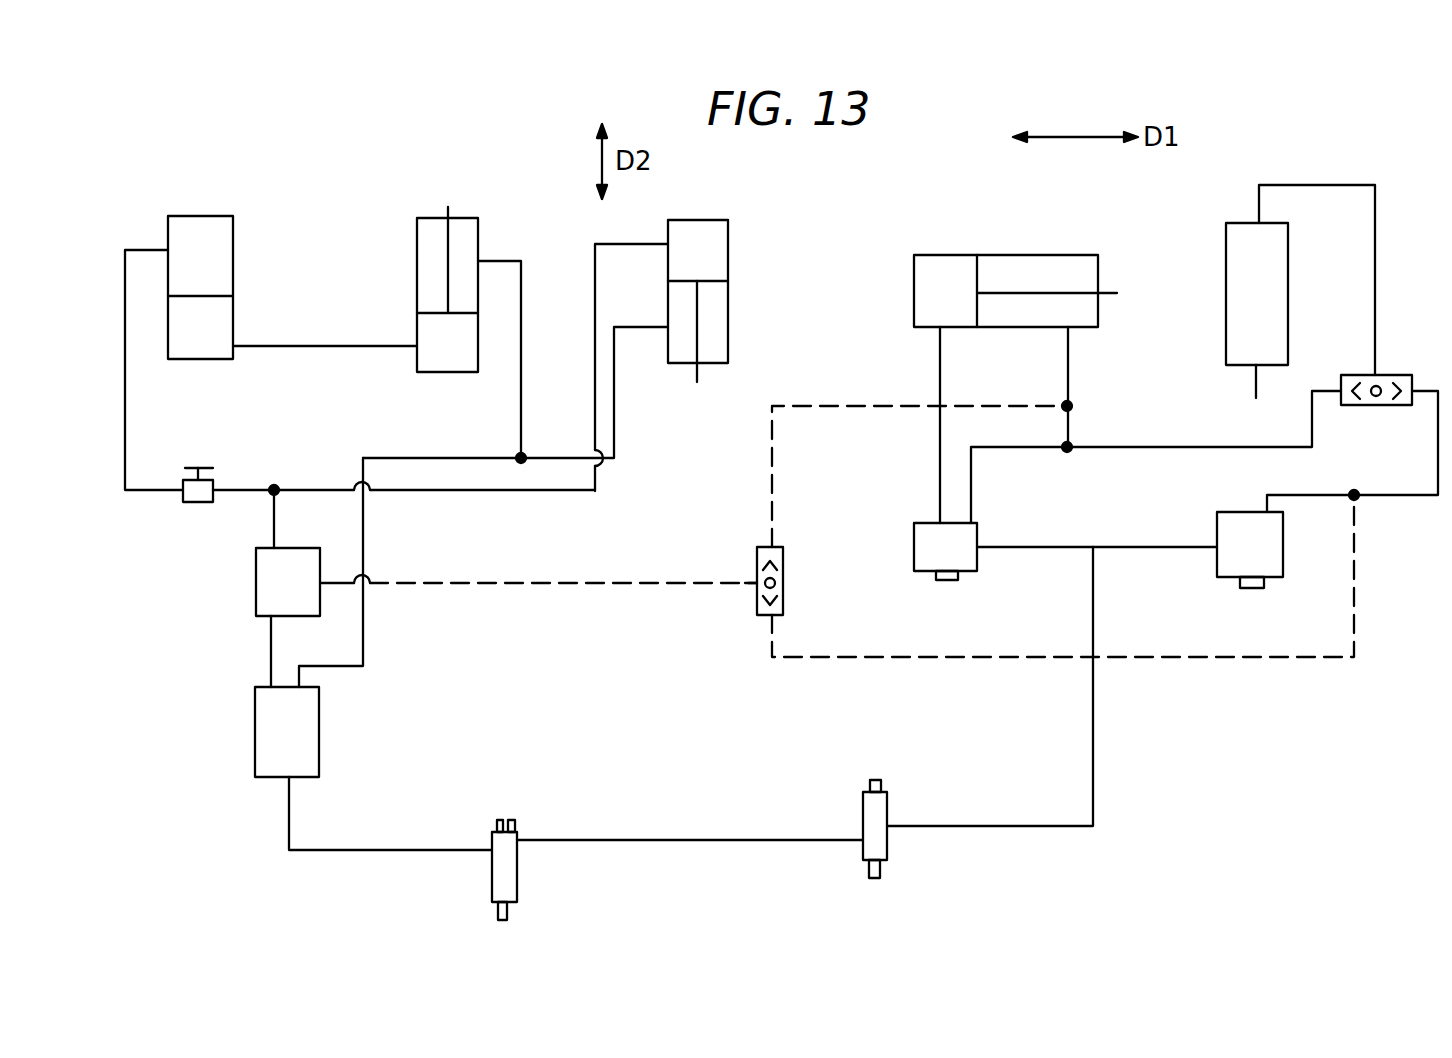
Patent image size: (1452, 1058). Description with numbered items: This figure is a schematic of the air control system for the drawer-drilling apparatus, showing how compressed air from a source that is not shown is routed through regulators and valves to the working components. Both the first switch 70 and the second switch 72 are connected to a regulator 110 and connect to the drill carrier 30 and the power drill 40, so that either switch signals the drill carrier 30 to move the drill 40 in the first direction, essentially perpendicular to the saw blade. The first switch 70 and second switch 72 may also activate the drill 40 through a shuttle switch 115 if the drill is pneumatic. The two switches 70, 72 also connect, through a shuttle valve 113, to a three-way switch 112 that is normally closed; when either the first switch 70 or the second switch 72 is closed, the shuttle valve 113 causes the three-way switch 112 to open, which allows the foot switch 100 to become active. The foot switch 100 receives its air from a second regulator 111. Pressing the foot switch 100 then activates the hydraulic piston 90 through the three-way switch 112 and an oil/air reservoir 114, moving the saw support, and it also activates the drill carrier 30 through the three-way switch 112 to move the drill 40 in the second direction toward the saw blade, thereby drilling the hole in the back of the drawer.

The drill carrier 30 is at (728, 246).
The power drill 40 is at (1225, 292).
The first switch 70 is at (972, 532).
The second switch 72 is at (1227, 512).
The hydraulic piston 90 is at (468, 230).
The foot switch 100 is at (319, 735).
The regulator 110 is at (887, 845).
The second regulator 111 is at (517, 883).
The three-way switch 112 is at (265, 578).
The shuttle valve 113 is at (783, 546).
The oil/air reservoir 114 is at (203, 215).
The shuttle switch 115 is at (1412, 377).